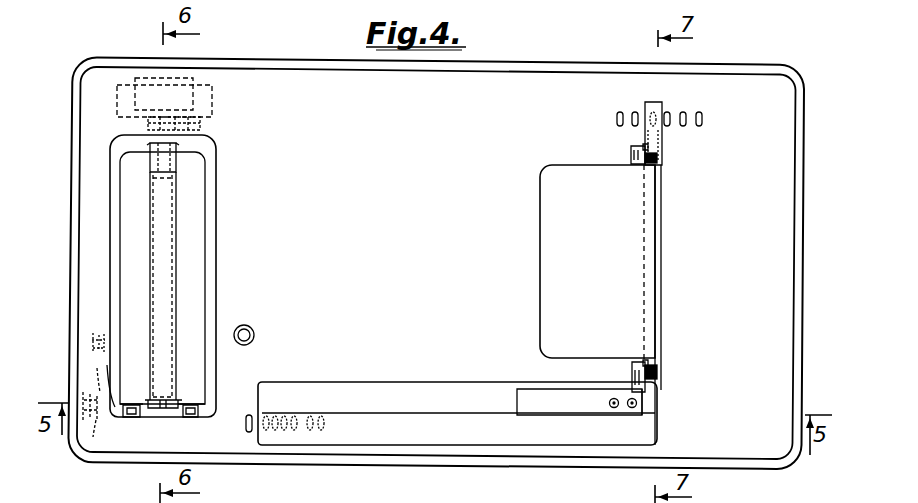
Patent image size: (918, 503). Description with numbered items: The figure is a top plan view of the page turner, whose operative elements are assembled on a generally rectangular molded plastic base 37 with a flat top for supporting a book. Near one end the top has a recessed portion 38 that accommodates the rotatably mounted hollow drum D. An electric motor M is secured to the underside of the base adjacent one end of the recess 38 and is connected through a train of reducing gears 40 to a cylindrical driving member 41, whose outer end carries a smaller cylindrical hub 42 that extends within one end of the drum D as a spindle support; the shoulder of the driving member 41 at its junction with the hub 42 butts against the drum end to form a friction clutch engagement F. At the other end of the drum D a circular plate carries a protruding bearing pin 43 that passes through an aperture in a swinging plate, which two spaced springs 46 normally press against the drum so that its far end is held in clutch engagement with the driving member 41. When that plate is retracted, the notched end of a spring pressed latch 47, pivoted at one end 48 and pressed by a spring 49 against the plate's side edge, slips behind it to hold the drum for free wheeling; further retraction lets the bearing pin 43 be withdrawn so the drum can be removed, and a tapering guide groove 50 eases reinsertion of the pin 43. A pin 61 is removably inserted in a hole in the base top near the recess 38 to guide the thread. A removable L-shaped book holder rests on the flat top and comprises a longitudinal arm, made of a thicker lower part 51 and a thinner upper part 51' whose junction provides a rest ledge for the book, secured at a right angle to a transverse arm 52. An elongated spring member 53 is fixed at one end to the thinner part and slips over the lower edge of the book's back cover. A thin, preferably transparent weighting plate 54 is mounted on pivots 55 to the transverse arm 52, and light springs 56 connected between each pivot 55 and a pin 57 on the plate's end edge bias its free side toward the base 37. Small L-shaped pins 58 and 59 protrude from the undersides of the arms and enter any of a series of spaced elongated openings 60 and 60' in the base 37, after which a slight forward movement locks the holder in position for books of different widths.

The base 37 is at (780, 80).
The electric motor M is at (212, 97).
The train of reducing gears 40 is at (152, 132).
The cylindrical driving member 41 is at (152, 162).
The cylindrical hub 42 is at (157, 182).
The recessed portion 38 is at (195, 206).
The friction clutch engagement F is at (177, 170).
The hollow drum D is at (176, 284).
The pin 61 is at (245, 326).
The latch pivot 48 is at (93, 333).
The spring pressed latch 47 is at (97, 367).
The spring 49 is at (93, 437).
The springs 46 is at (198, 416).
The tapering guide groove 50 is at (155, 418).
The bearing pin 43 is at (167, 420).
The elongated openings 60 is at (285, 387).
The lower part of base arm 51 is at (457, 437).
The upper part of base arm 51' is at (458, 379).
The L-shaped pins 58 is at (283, 440).
The elongated spring member 53 is at (533, 398).
The transverse arm 52 is at (656, 393).
The plate 54 is at (540, 240).
The L-shaped pins 59 is at (663, 110).
The elongated openings 60' is at (638, 104).
The light springs 56 is at (640, 362).
The pin 57 is at (632, 372).
The pivots 55 is at (657, 365).